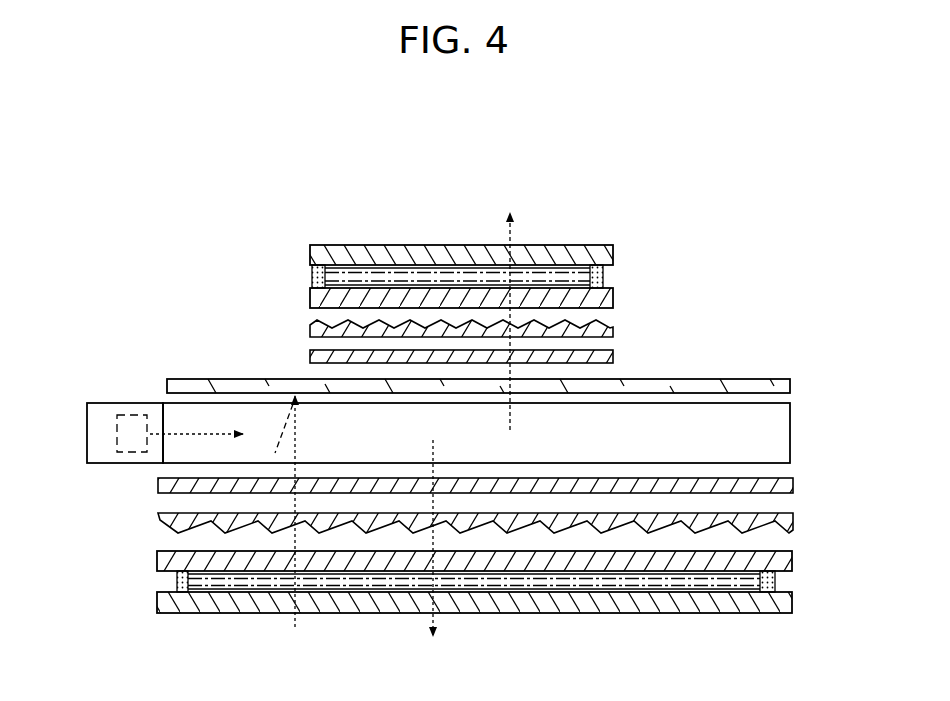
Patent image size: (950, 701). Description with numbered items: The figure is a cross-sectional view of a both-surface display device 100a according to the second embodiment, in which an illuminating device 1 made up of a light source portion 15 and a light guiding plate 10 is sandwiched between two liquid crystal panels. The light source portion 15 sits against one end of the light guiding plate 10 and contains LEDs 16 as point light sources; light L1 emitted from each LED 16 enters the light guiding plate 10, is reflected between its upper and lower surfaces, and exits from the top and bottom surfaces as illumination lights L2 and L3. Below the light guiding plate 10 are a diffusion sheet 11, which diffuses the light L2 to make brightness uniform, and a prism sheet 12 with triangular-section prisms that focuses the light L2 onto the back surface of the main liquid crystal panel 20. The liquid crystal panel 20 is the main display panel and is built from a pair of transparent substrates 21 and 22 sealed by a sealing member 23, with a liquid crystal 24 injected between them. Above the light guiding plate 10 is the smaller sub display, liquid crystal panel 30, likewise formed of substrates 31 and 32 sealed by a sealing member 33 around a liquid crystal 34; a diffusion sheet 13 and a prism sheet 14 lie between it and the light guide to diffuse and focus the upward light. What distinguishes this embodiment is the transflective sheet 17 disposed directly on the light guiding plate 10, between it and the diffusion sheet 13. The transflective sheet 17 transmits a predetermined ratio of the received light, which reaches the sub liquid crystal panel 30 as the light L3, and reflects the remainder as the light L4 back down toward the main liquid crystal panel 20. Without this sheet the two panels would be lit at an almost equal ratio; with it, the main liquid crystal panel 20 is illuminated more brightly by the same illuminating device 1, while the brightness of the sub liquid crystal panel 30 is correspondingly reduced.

The display device 100a is at (443, 162).
The illuminating device 1 is at (115, 387).
The light guiding plate 10 is at (790, 431).
The diffusion sheet 11 is at (158, 487).
The prism sheet 12 is at (160, 530).
The diffusion sheet 13 is at (310, 356).
The prism sheet 14 is at (310, 328).
The light source portion 15 is at (130, 402).
The LED 16 is at (118, 432).
The transflective sheet 17 is at (713, 380).
The liquid crystal panel 20 is at (810, 557).
The transparent substrate 21 is at (157, 562).
The transparent substrate 22 is at (512, 613).
The sealing member 23 is at (177, 580).
The liquid crystal 24 is at (622, 580).
The liquid crystal panel 30 is at (622, 248).
The substrate 31 is at (310, 292).
The substrate 32 is at (363, 245).
The sealing member 33 is at (312, 274).
The liquid crystal 34 is at (418, 273).
The light L1 is at (190, 430).
The illumination light L2 is at (434, 555).
The illumination light L3 is at (515, 305).
The reflected light L4 is at (298, 537).